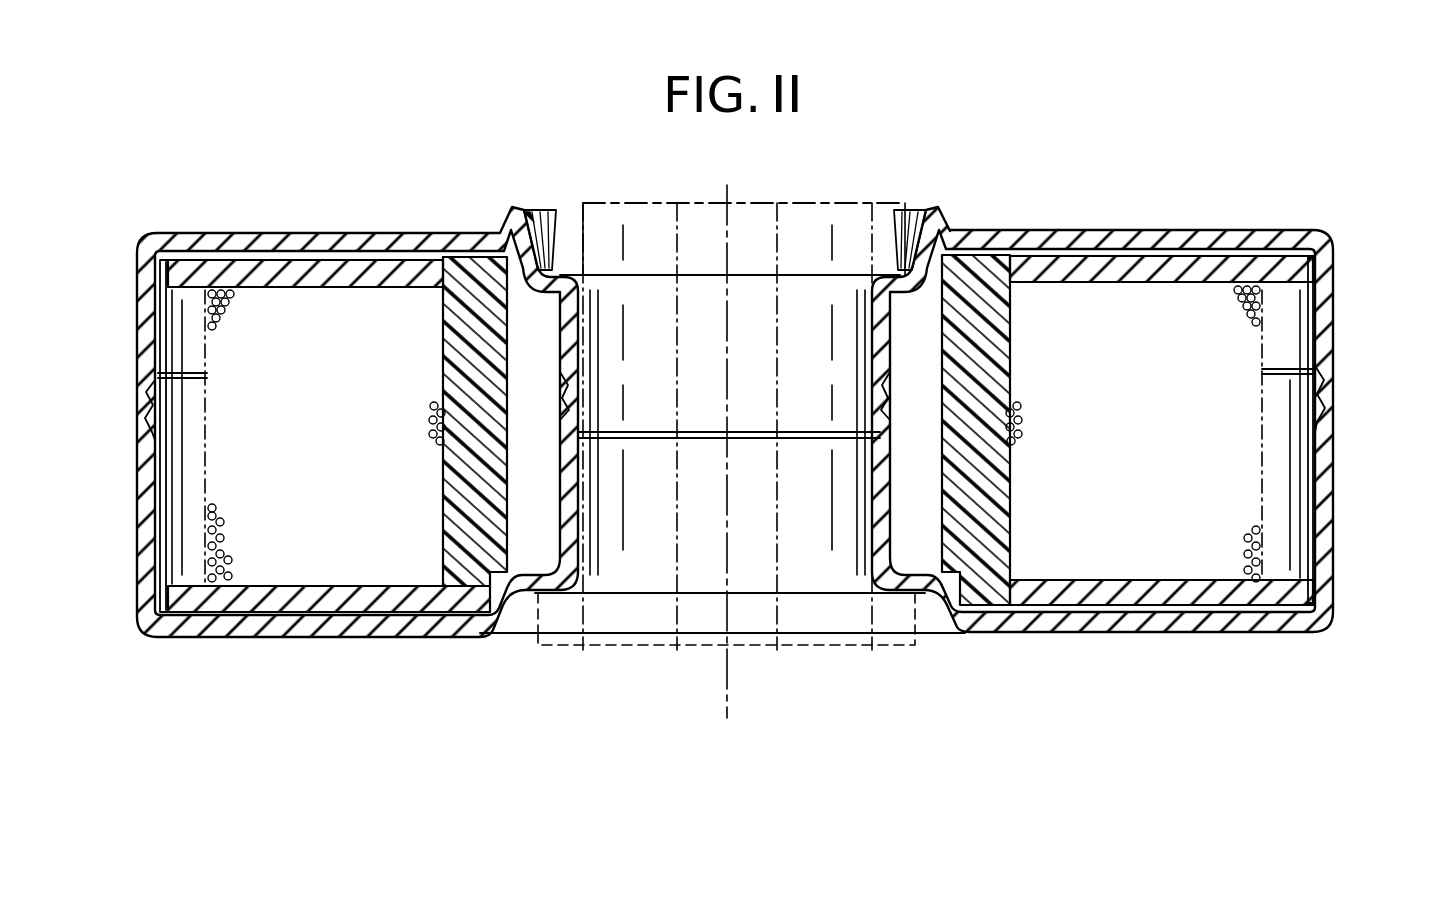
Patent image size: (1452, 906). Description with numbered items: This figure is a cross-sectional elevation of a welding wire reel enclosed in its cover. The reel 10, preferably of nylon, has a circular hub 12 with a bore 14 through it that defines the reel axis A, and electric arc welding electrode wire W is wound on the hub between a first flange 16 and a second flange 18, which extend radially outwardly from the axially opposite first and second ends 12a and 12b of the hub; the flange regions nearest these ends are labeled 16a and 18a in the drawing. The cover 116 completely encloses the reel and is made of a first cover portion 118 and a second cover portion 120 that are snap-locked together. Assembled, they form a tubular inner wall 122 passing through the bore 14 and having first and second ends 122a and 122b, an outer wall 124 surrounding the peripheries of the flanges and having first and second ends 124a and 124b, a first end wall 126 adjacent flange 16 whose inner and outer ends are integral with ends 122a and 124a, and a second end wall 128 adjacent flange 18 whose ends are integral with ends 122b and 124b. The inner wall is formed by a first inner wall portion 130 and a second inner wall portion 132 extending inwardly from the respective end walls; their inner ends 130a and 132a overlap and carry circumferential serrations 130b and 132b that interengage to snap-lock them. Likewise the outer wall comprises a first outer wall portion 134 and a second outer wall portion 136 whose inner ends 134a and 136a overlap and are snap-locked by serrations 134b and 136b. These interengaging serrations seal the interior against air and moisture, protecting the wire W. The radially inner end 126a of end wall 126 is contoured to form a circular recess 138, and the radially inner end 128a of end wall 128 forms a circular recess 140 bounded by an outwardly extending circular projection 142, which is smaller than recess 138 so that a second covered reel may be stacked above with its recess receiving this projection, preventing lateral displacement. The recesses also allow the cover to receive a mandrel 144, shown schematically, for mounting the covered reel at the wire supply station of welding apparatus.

The reel 10 is at (1032, 252).
The circular hub 12 is at (462, 480).
The first end of hub 12a is at (476, 608).
The second end of hub 12b is at (462, 262).
The bore 14 is at (573, 478).
The first flange 16 is at (285, 606).
The cup bottom wall outer portion 16a is at (232, 634).
The second flange 18 is at (275, 268).
The cup side wall 18a is at (212, 272).
The cover 116 is at (1266, 158).
The first cover portion 118 is at (352, 640).
The second cover portion 120 is at (343, 228).
The tubular inner wall 122 is at (860, 355).
The first end of inner wall 122a is at (876, 560).
The second end of inner wall 122b is at (892, 278).
The outer wall 124 is at (1343, 460).
The first end of outer wall 124a is at (1330, 590).
The second end of outer wall 124b is at (1333, 273).
The first end wall 126 is at (1145, 636).
The radially inner end of first end wall 126a is at (908, 598).
The second end wall 128 is at (1115, 230).
The radially inner end of second end wall 128a is at (896, 270).
The first inner wall portion 130 is at (882, 504).
The inner end of first inner wall portion 130a is at (900, 410).
The serrations 130b is at (887, 396).
The second inner wall portion 132 is at (874, 330).
The inner end of second inner wall portion 132a is at (886, 392).
The serrations 132b is at (882, 412).
The first outer wall portion 134 is at (1320, 528).
The inner end of first outer wall portion 134a is at (1318, 426).
The serrations 134b is at (1308, 390).
The second outer wall portion 136 is at (1333, 330).
The inner end of second outer wall portion 136a is at (1327, 386).
The serrations 136b is at (1320, 418).
The circular recess 138 is at (927, 602).
The circular recess 140 is at (541, 255).
The circular projection 142 is at (518, 238).
The mandrel 144 is at (660, 203).
The reel axis A is at (726, 700).
The electric arc welding electrode wire W is at (430, 418).